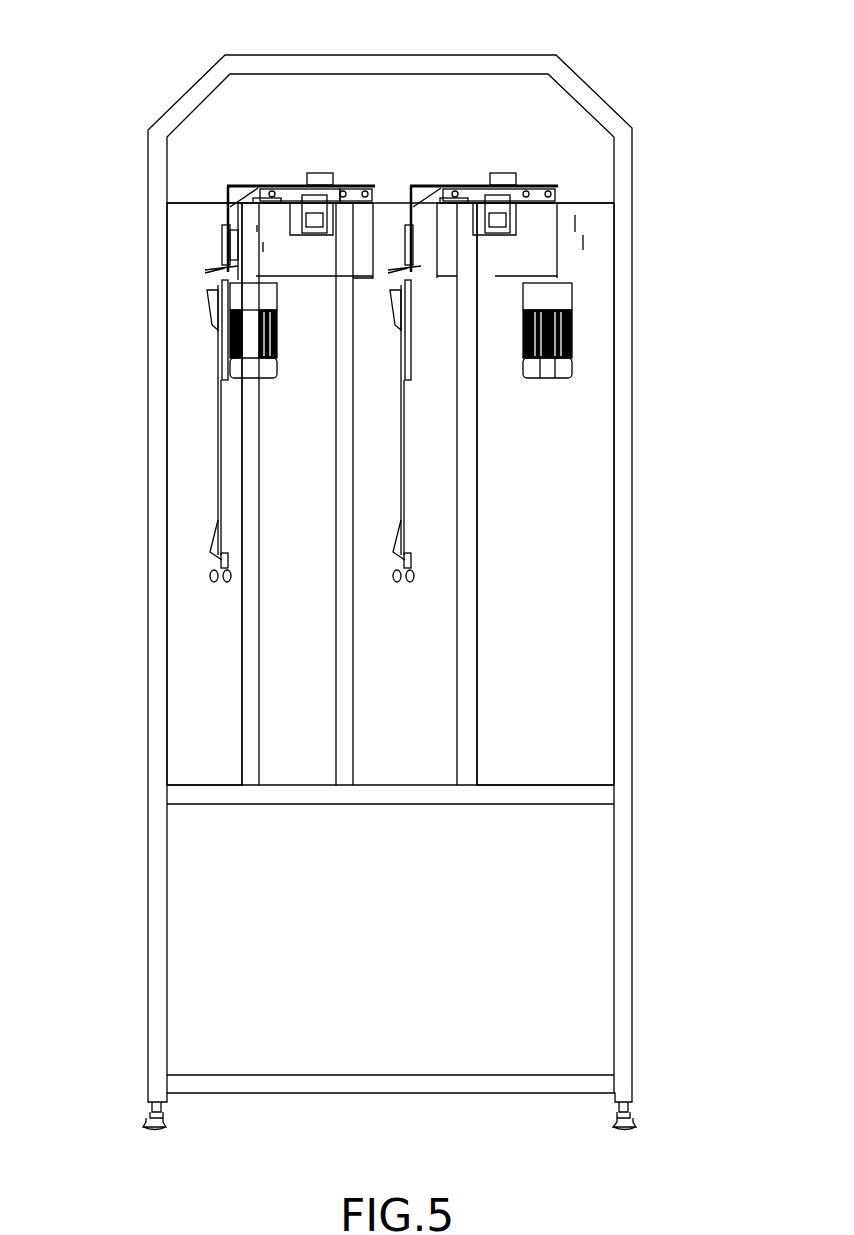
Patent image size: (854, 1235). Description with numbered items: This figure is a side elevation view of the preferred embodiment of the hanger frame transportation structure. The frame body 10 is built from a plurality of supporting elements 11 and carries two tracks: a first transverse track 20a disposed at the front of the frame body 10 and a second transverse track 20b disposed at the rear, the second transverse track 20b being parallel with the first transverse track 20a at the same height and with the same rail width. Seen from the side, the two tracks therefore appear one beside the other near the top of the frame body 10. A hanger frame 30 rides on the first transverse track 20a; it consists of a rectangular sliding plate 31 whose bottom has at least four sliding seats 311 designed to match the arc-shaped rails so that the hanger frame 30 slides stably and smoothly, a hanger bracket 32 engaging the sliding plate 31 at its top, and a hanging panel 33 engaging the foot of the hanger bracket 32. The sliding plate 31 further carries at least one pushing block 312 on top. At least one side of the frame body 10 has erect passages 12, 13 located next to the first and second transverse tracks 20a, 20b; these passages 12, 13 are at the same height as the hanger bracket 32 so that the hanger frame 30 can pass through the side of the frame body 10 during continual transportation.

The frame body 10 is at (653, 100).
The supporting element 11 is at (607, 243).
The erect passage 12 is at (188, 275).
The erect passage 13 is at (403, 203).
The first transverse track 20a is at (365, 196).
The second transverse track 20b is at (527, 196).
The hanger frame 30 is at (220, 293).
The sliding plate 31 is at (300, 187).
The sliding seat 311 is at (372, 196).
The pushing block 312 is at (323, 183).
The hanger bracket 32 is at (230, 240).
The hanging panel 33 is at (220, 515).